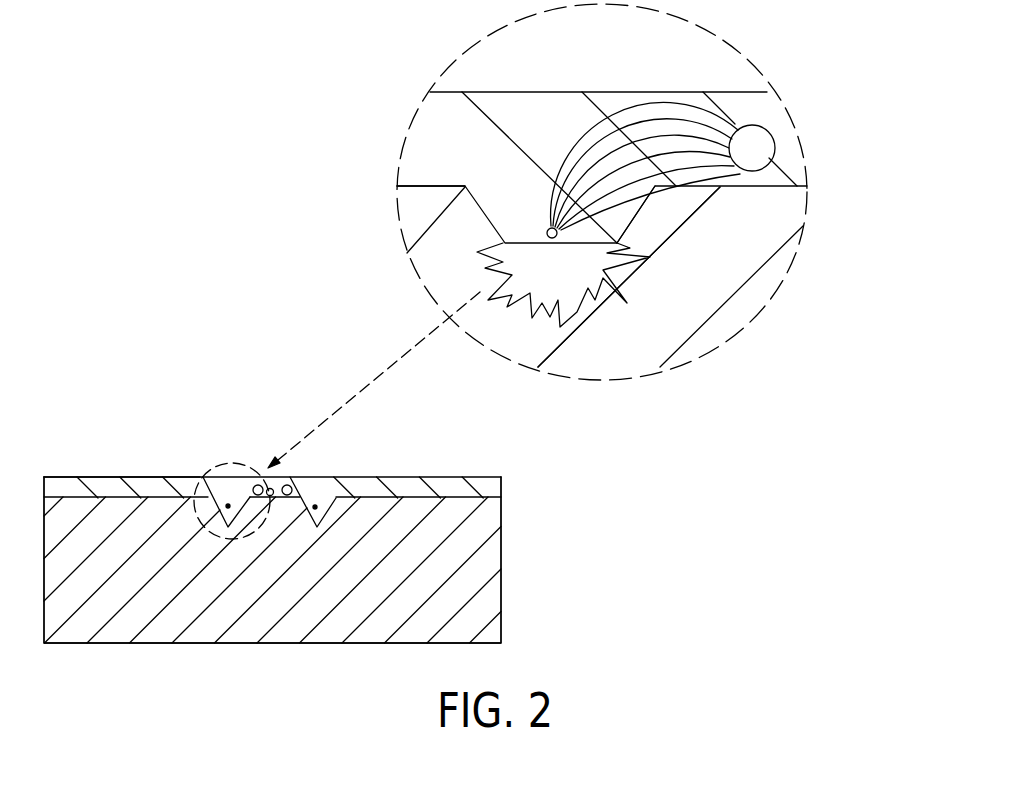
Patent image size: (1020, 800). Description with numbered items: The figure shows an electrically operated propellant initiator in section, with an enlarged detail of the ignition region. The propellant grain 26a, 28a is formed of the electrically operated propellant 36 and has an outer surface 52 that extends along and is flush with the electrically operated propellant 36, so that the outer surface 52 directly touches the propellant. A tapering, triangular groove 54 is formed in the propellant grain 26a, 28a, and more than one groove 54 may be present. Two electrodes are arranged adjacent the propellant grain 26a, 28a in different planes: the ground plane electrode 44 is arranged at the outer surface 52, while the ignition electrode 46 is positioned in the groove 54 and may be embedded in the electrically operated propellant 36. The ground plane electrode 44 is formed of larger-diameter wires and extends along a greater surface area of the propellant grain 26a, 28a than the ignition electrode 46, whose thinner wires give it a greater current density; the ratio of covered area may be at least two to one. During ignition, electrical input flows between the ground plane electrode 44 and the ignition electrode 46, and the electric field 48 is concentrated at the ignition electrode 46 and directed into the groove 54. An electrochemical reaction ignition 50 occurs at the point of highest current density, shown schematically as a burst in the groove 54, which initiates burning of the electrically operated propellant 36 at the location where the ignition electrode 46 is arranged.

The propellant grain 26a is at (775, 213).
The propellant grain 28a is at (775, 213).
The electrically operated propellant 36 is at (790, 158).
The ground plane electrode 44 is at (758, 142).
The ignition electrode 46 is at (548, 234).
The electric field 48 is at (641, 106).
The electrochemical reaction ignition 50 is at (495, 270).
The outer surface 52 is at (428, 186).
The groove 54 is at (637, 213).